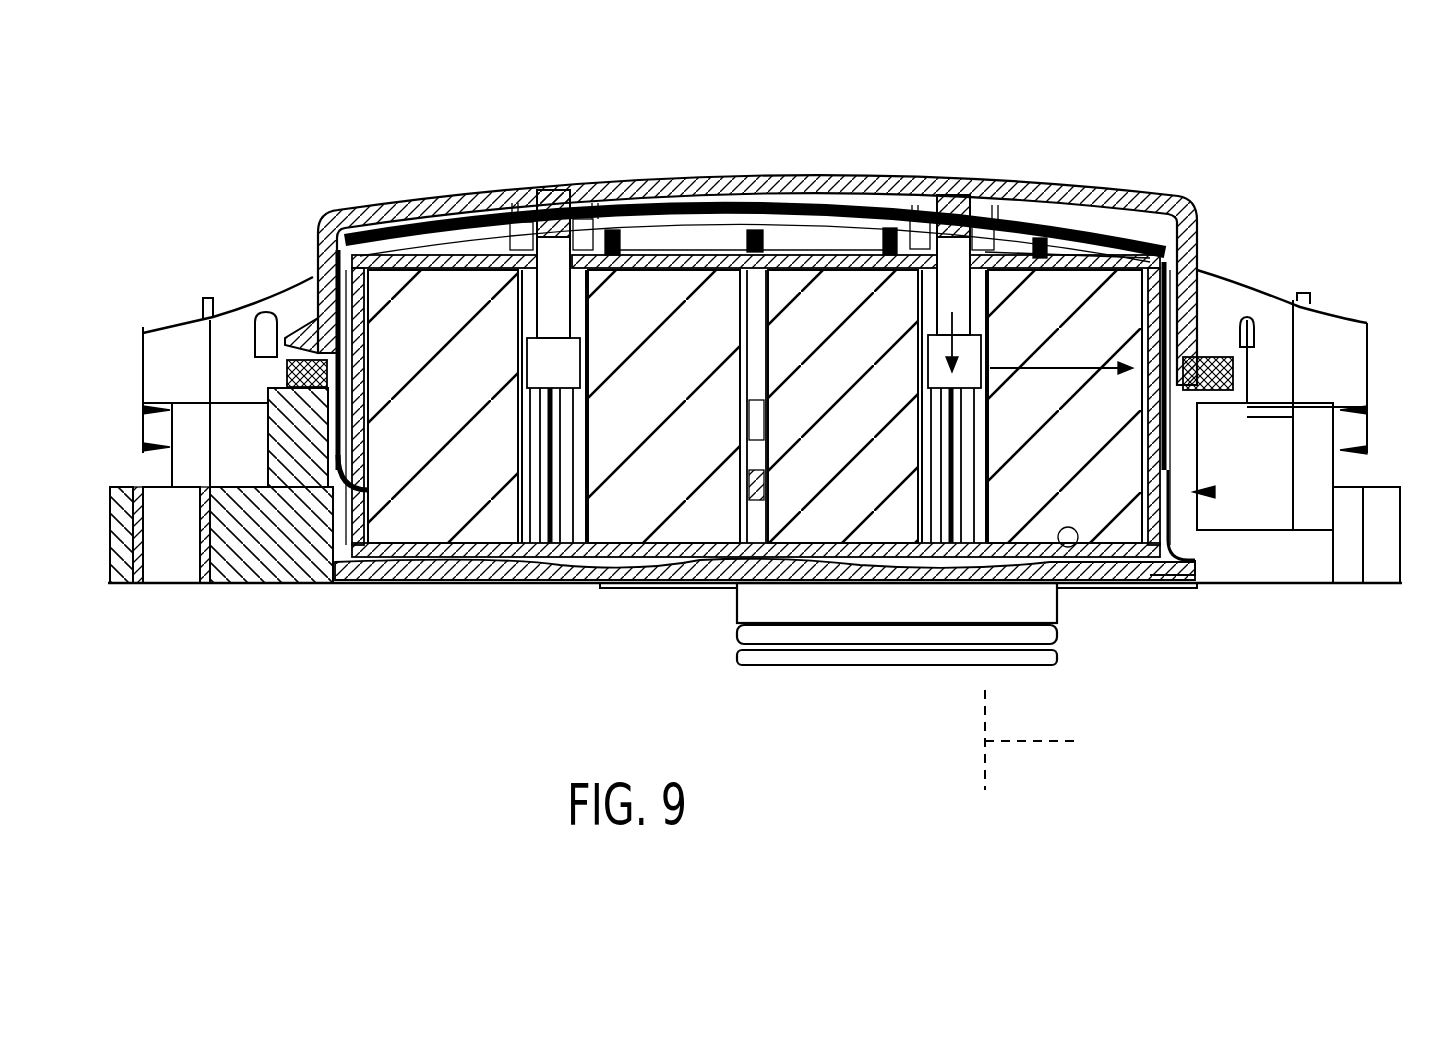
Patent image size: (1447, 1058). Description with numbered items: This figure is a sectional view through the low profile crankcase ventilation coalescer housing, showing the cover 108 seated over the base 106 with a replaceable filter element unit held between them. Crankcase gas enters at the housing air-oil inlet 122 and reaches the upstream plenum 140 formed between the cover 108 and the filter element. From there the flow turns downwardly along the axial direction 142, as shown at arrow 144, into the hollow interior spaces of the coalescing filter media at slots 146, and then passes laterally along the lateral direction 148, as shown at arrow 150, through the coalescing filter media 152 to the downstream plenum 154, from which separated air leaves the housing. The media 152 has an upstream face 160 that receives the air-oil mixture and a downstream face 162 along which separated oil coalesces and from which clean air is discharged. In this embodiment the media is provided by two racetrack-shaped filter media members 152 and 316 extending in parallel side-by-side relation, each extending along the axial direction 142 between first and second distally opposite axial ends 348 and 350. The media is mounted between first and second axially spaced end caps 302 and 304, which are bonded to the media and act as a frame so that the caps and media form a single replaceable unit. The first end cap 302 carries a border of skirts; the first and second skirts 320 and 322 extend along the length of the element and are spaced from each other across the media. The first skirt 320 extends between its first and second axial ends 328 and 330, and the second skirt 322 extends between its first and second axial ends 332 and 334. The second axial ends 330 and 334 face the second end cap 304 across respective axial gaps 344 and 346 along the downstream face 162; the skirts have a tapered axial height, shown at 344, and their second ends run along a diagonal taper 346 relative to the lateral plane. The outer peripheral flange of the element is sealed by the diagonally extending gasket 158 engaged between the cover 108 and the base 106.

The base 106 is at (1200, 580).
The cover 108 is at (1178, 210).
The housing air-oil inlet 122 is at (737, 600).
The upstream plenum 140 is at (805, 235).
The axial direction 142 is at (985, 733).
The arrow 144 is at (930, 325).
The slots 146 is at (922, 400).
The lateral direction 148 is at (1040, 742).
The arrow 150 is at (1093, 363).
The coalescing filter media 152 is at (1120, 577).
The downstream plenum 154 is at (1213, 492).
The gasket 158 is at (275, 372).
The upstream face 160 is at (993, 343).
The downstream face 162 is at (1127, 397).
The first end cap 302 is at (1190, 262).
The second end cap 304 is at (1197, 548).
The filter media member 316 is at (613, 517).
The first skirt 320 is at (1305, 296).
The second skirt 322 is at (312, 290).
The first axial end 328 is at (1205, 330).
The second axial end 330 is at (1340, 318).
The first axial end 332 is at (370, 282).
The second axial end 334 is at (367, 360).
The axial gap 344 is at (1160, 440).
The axial gap 346 is at (345, 460).
The first axial end 348 is at (1095, 275).
The second axial end 350 is at (1080, 548).